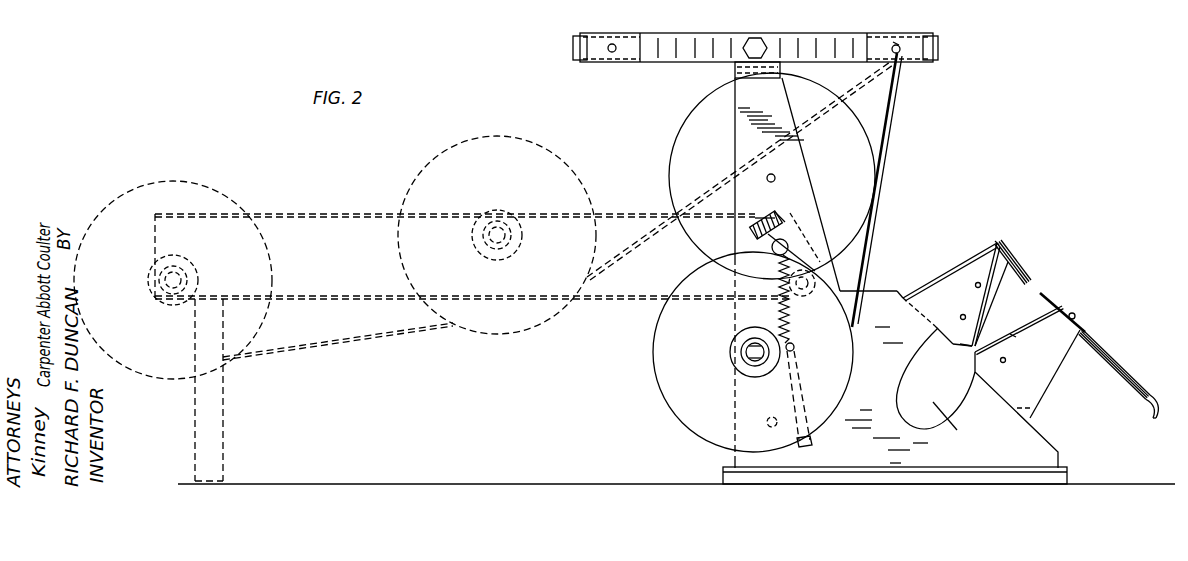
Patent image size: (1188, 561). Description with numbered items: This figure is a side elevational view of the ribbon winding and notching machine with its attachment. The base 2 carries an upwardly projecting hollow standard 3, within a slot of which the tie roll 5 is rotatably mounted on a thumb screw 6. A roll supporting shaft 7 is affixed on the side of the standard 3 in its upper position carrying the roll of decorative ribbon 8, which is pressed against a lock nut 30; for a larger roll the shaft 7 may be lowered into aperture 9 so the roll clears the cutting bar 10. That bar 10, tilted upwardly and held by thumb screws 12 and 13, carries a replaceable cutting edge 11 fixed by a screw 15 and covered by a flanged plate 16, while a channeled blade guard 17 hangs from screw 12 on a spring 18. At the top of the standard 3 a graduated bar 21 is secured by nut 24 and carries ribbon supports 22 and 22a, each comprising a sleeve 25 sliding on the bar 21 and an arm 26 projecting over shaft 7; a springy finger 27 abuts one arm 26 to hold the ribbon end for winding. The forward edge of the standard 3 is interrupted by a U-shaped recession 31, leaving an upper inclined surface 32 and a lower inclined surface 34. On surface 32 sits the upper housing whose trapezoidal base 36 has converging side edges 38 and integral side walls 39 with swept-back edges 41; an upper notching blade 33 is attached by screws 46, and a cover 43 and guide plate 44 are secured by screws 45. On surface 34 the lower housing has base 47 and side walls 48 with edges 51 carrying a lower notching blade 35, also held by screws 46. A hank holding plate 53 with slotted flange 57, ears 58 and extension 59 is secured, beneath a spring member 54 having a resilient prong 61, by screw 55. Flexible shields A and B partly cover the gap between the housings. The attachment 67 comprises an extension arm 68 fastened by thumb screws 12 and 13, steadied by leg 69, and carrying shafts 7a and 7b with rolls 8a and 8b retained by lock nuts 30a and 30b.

The base 2 is at (723, 475).
The standard 3 is at (740, 457).
The tie roll 5 is at (692, 140).
The thumb screw 6 is at (772, 174).
The roll supporting shaft 7 is at (750, 354).
The shaft 7a is at (512, 236).
The shaft 7b is at (160, 281).
The roll of decorative ribbon 8 is at (668, 375).
The roll of ribbon 8a is at (455, 149).
The roll of ribbon 8b is at (190, 168).
The aperture 9 is at (768, 417).
The cutting bar 10 is at (753, 232).
The cutting edge 11 is at (788, 217).
The thumb screw 12 is at (791, 242).
The thumb screw 13 is at (812, 289).
The screw 15 is at (766, 217).
The flanged plate 16 is at (778, 217).
The blade guard 17 is at (798, 368).
The spring 18 is at (776, 312).
The bar 21 is at (827, 38).
The ribbon support 22 is at (905, 64).
The ribbon support 22a is at (598, 64).
The nut 24 is at (755, 37).
The sleeve 25 is at (606, 16).
The arm 26 is at (613, 53).
The finger 27 is at (898, 40).
The lock nut 30 is at (740, 338).
The lock nut 30a is at (475, 258).
The lock nut 30b is at (200, 277).
The U-shaped recession 31 is at (955, 424).
The upper inclined surface 32 is at (910, 313).
The upper notching blade 33 is at (999, 298).
The lower inclined surface 34 is at (1012, 403).
The lower notching blade 35 is at (1030, 322).
The base 36 is at (938, 326).
The side edge 38 is at (942, 343).
The side wall 39 is at (980, 264).
The edge 41 is at (981, 332).
The cover 43 is at (942, 273).
The guide plate 44 is at (997, 243).
The screw 45 is at (1008, 254).
The screw 46 is at (976, 286).
The base 47 is at (1030, 410).
The side wall 48 is at (1033, 386).
The edge 51 is at (1052, 334).
The plate 53 is at (1108, 358).
The spring member 54 is at (1100, 339).
The screw 55 is at (1077, 316).
The slotted flange 57 is at (1072, 310).
The ear 58 is at (1123, 364).
The extension 59 is at (1152, 413).
The resilient prong 61 is at (1163, 401).
The attachment 67 is at (357, 197).
The extension arm 68 is at (305, 213).
The leg 69 is at (220, 410).
The shield A is at (1023, 274).
The shield B is at (1047, 297).